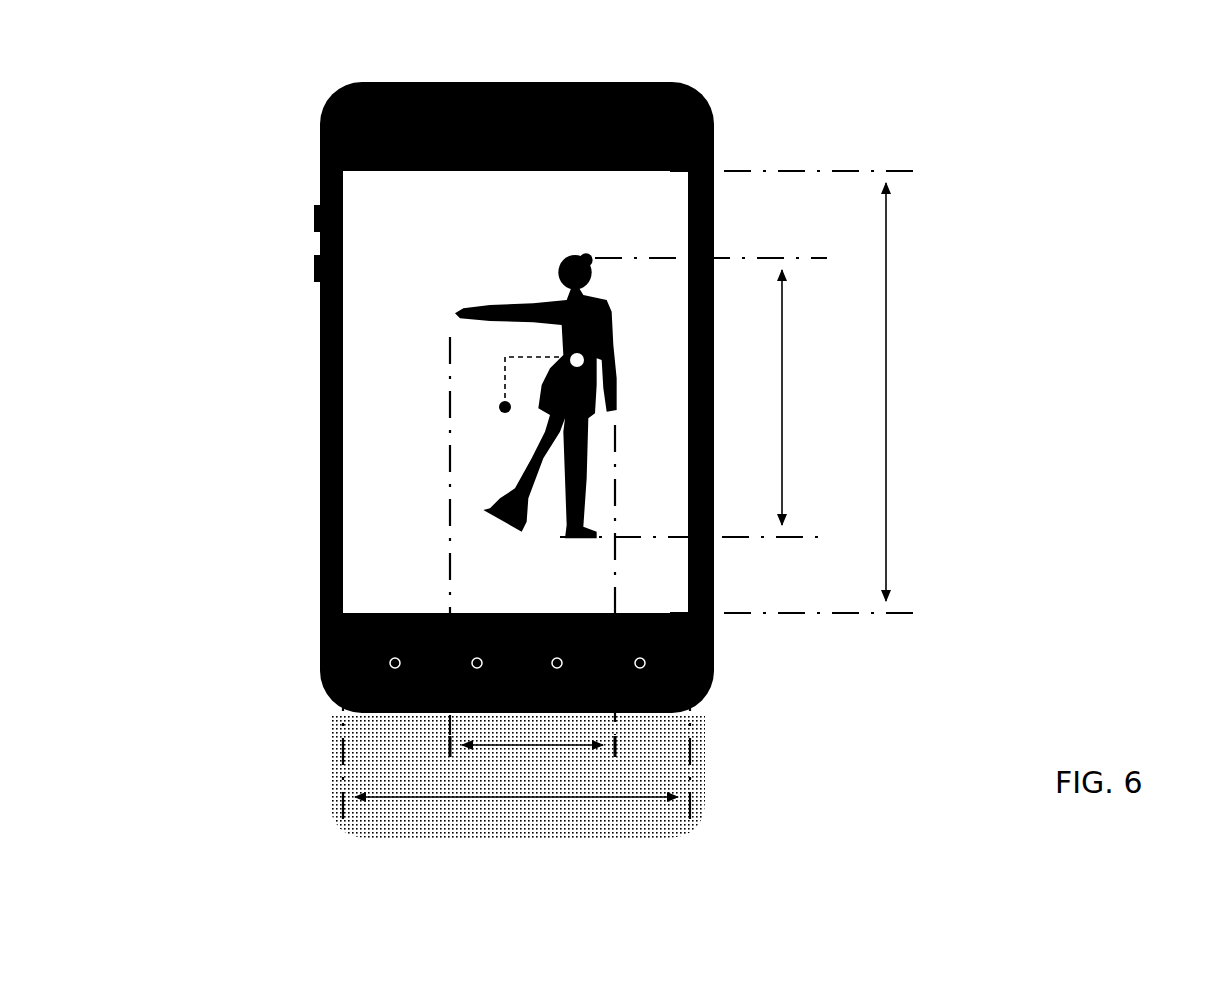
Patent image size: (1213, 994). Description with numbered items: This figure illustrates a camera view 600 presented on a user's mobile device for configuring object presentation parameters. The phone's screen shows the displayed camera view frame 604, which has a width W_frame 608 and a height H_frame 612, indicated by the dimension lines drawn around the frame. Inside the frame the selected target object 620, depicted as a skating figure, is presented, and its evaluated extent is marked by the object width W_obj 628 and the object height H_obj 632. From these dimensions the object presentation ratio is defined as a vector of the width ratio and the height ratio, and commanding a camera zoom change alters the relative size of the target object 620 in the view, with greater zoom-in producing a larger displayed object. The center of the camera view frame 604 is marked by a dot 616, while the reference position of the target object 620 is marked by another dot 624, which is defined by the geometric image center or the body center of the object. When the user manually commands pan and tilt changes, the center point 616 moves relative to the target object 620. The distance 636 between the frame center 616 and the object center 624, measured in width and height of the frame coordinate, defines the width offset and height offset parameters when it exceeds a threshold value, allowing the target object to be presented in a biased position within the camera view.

The camera view 600 is at (270, 228).
The camera view frame 604 is at (408, 248).
The target object 620 is at (502, 297).
The reference position of the target object 624 is at (570, 358).
The distance between camera frame center and target object center 636 is at (503, 371).
The center point of the camera view frame 616 is at (500, 410).
The frame height H_frame 612 is at (887, 232).
The object height H_obj 632 is at (783, 302).
The object width W_obj 628 is at (580, 748).
The frame width W_frame 608 is at (420, 793).